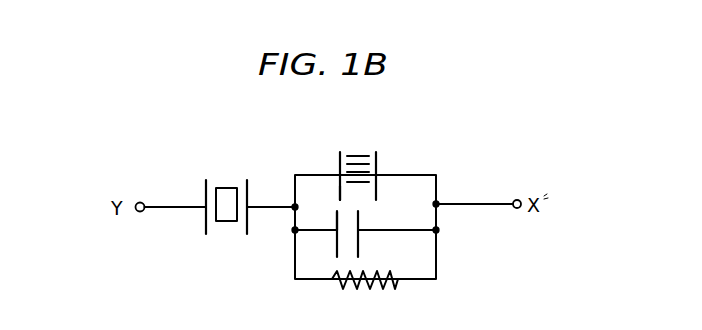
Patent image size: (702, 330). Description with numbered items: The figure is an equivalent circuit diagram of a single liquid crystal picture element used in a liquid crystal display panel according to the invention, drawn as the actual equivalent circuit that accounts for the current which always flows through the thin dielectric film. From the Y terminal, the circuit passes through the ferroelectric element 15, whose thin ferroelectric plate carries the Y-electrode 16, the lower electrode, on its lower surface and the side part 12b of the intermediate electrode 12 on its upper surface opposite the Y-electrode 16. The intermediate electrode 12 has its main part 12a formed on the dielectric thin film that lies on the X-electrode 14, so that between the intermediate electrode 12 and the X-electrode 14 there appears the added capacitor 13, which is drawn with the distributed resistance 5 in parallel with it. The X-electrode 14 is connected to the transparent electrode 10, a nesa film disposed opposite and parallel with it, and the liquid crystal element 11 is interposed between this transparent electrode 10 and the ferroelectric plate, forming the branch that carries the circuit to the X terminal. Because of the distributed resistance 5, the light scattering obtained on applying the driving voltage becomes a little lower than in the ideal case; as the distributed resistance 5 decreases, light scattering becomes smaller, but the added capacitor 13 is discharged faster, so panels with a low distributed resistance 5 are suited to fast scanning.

The distributed resistance 5 is at (378, 288).
The transparent electrode 10 is at (377, 162).
The liquid crystal element 11 is at (355, 152).
The intermediate electrode 12 is at (294, 232).
The main part of intermediate electrode 12a is at (336, 230).
The side part of intermediate electrode 12b is at (247, 181).
The added capacitor 13 is at (362, 218).
The X-electrode 14 is at (359, 241).
The ferroelectric element 15 is at (226, 191).
The Y-electrode 16 is at (206, 214).